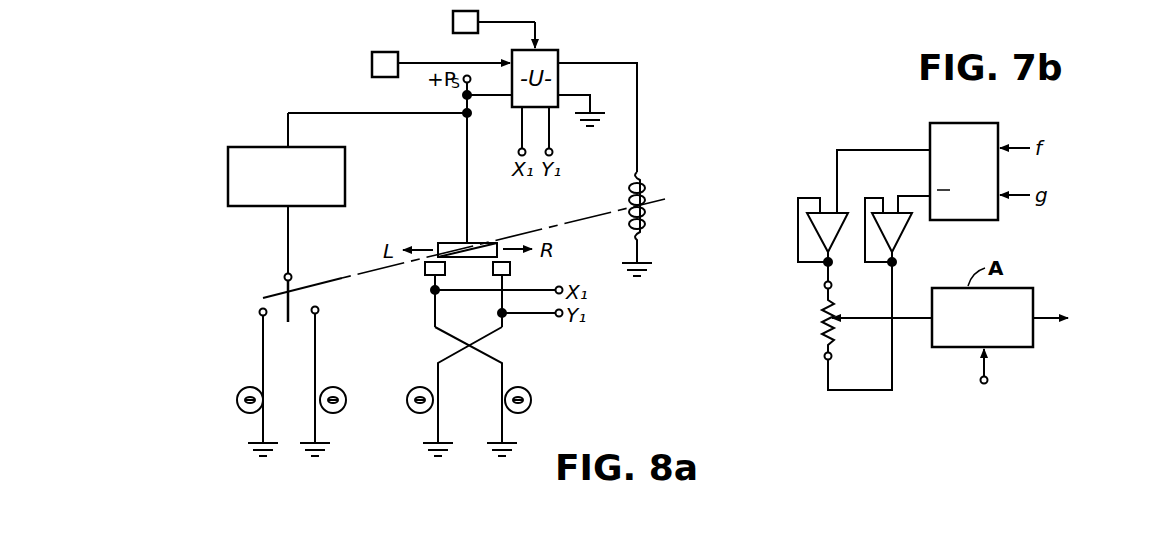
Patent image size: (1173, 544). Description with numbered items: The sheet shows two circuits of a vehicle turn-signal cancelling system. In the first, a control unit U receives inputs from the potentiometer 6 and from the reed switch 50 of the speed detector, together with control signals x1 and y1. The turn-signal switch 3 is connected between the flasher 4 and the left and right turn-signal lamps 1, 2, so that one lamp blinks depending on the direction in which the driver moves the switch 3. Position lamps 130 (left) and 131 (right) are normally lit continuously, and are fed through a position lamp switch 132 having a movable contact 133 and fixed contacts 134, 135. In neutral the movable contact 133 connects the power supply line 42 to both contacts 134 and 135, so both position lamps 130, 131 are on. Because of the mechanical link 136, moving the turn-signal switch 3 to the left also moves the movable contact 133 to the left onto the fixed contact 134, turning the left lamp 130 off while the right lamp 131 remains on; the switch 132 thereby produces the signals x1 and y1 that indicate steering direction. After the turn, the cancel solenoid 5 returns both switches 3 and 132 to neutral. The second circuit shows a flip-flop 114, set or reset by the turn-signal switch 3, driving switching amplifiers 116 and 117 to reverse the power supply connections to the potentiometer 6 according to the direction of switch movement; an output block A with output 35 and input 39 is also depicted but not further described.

In FIG. 8a, the left turn-signal lamp 1 is at (238, 410).
In FIG. 8a, the right turn-signal lamp 2 is at (330, 412).
In FIG. 8a, the turn-signal switch 3 is at (280, 293).
In FIG. 8a, the flasher 4 is at (249, 147).
In FIG. 8a, the cancel solenoid 5 is at (644, 172).
In FIG. 8a, the potentiometer 6 is at (453, 22).
In FIG. 7b, the potentiometer 6 is at (822, 322).
In FIG. 7b, the output 35 is at (1043, 312).
In FIG. 7b, the input 39 is at (986, 366).
In FIG. 8a, the power supply line 42 is at (462, 106).
In FIG. 8a, the reed switch of speed detector 50 is at (372, 67).
In FIG. 7b, the flip-flop 114 is at (975, 123).
In FIG. 7b, the switching amplifier 116 is at (829, 210).
In FIG. 7b, the switching amplifier 117 is at (897, 233).
In FIG. 8a, the left position lamp 130 is at (424, 412).
In FIG. 8a, the right position lamp 131 is at (520, 412).
In FIG. 8a, the position lamp switch 132 is at (460, 240).
In FIG. 8a, the movable contact 133 is at (472, 242).
In FIG. 8a, the fixed contact 134 is at (423, 276).
In FIG. 8a, the fixed contact 135 is at (510, 270).
In FIG. 8a, the mechanical link 136 is at (351, 257).